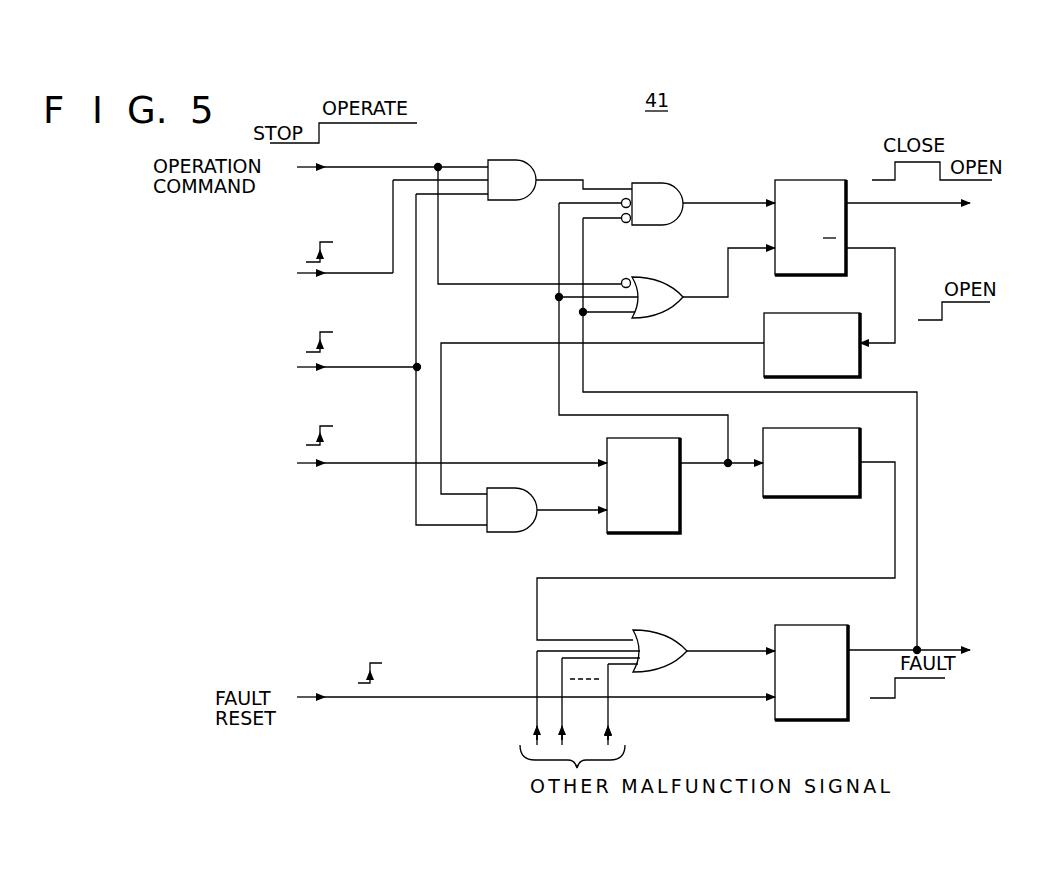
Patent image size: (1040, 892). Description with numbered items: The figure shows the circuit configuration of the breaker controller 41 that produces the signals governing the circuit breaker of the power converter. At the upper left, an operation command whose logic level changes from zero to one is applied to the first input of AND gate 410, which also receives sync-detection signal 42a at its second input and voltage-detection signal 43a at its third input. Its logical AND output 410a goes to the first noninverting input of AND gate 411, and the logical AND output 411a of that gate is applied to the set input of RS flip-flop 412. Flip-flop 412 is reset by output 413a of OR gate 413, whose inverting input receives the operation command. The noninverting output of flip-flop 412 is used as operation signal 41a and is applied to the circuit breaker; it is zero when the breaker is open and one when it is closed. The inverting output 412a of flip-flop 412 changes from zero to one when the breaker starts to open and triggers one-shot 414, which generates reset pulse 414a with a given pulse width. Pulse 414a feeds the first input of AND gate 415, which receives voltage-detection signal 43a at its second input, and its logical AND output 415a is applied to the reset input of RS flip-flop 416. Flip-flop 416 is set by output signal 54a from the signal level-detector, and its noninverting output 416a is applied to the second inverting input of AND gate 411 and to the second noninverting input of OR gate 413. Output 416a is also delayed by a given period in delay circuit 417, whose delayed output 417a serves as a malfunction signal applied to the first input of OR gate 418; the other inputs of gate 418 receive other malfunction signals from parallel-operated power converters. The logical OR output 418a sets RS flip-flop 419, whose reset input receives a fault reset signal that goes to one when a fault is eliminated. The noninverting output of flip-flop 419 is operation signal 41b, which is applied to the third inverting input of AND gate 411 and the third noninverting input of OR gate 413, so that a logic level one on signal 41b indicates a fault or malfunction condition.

The breaker controller 41 is at (580, 450).
The operation signal 41a is at (929, 204).
The operation signal 41b is at (931, 651).
The sync-detection signal 42a is at (320, 273).
The voltage-detection signal 43a is at (334, 367).
The output signal 54a is at (427, 463).
The AND gate 410 is at (515, 160).
The logical AND output 410a is at (572, 180).
The AND gate 411 is at (674, 183).
The logical AND output 411a is at (735, 203).
The RS flip-flop 412 is at (826, 180).
The inverting output 412a is at (897, 266).
The OR gate 413 is at (666, 277).
The output 413a is at (700, 299).
The one-shot 414 is at (836, 313).
The reset pulse 414a is at (650, 345).
The AND gate 415 is at (505, 532).
The logical AND output 415a is at (563, 512).
The RS flip-flop 416 is at (680, 526).
The noninverting output 416a is at (728, 467).
The delay circuit 417 is at (824, 428).
The delayed output 417a is at (812, 578).
The OR gate 418 is at (678, 630).
The logical OR output 418a is at (706, 653).
The RS flip-flop 419 is at (819, 625).